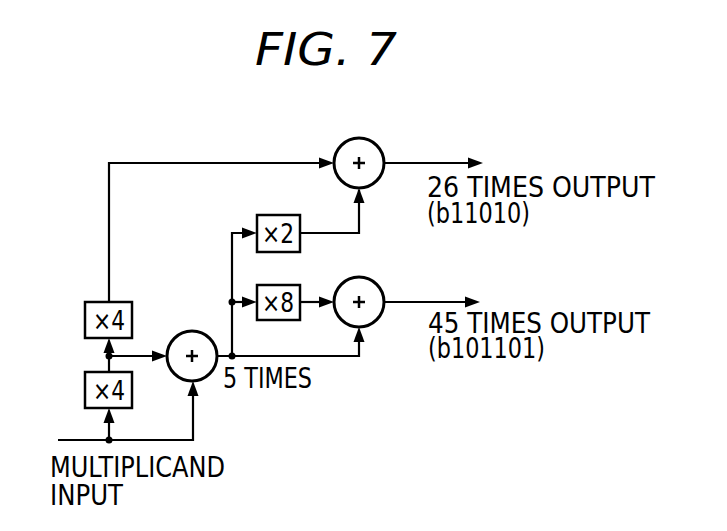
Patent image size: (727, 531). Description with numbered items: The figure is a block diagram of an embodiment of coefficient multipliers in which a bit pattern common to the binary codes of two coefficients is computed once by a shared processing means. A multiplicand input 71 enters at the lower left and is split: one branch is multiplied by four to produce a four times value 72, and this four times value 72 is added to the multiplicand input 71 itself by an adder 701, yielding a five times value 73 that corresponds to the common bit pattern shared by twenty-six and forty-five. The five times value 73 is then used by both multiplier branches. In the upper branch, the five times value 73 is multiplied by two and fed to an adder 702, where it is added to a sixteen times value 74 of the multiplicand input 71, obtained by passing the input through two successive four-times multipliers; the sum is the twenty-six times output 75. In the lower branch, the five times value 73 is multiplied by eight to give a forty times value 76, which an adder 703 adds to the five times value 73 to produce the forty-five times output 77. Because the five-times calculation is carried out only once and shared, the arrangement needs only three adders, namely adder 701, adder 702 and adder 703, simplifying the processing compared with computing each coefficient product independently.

The multiplicand input 71 is at (68, 440).
The 4 times value 72 is at (135, 352).
The 5 times value 73 is at (330, 357).
The 16 times value 74 is at (232, 162).
The 26 times output 75 is at (432, 162).
The 40 times value 76 is at (310, 295).
The 45 times output 77 is at (440, 300).
The adder 701 is at (196, 331).
The adder 702 is at (365, 138).
The adder 703 is at (380, 283).